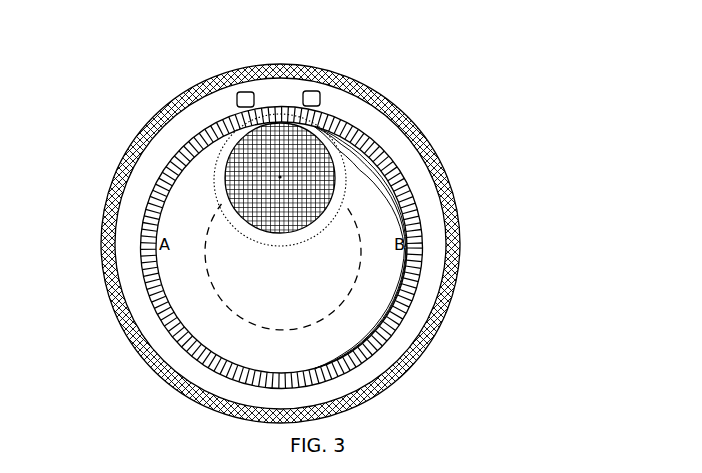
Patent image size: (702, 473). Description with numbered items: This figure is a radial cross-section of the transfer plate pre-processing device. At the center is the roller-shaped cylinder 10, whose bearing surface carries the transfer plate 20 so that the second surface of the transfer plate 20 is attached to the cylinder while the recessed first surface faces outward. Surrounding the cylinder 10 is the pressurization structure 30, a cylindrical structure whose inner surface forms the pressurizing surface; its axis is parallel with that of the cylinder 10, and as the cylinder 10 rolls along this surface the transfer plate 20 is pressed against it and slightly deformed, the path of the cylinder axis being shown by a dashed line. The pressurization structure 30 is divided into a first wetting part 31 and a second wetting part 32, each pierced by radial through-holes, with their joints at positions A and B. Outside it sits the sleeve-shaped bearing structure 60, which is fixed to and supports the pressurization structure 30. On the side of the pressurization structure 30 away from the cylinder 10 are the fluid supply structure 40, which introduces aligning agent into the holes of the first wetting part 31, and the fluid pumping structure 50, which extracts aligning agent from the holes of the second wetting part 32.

The cylinder 10 is at (240, 136).
The transfer plate 20 is at (326, 152).
The pressurization structure 30 is at (507, 168).
The first wetting part 31 is at (415, 213).
The second wetting part 32 is at (420, 278).
The fluid supply structure 40 is at (316, 91).
The fluid pumping structure 50 is at (244, 92).
The bearing structure 60 is at (428, 140).